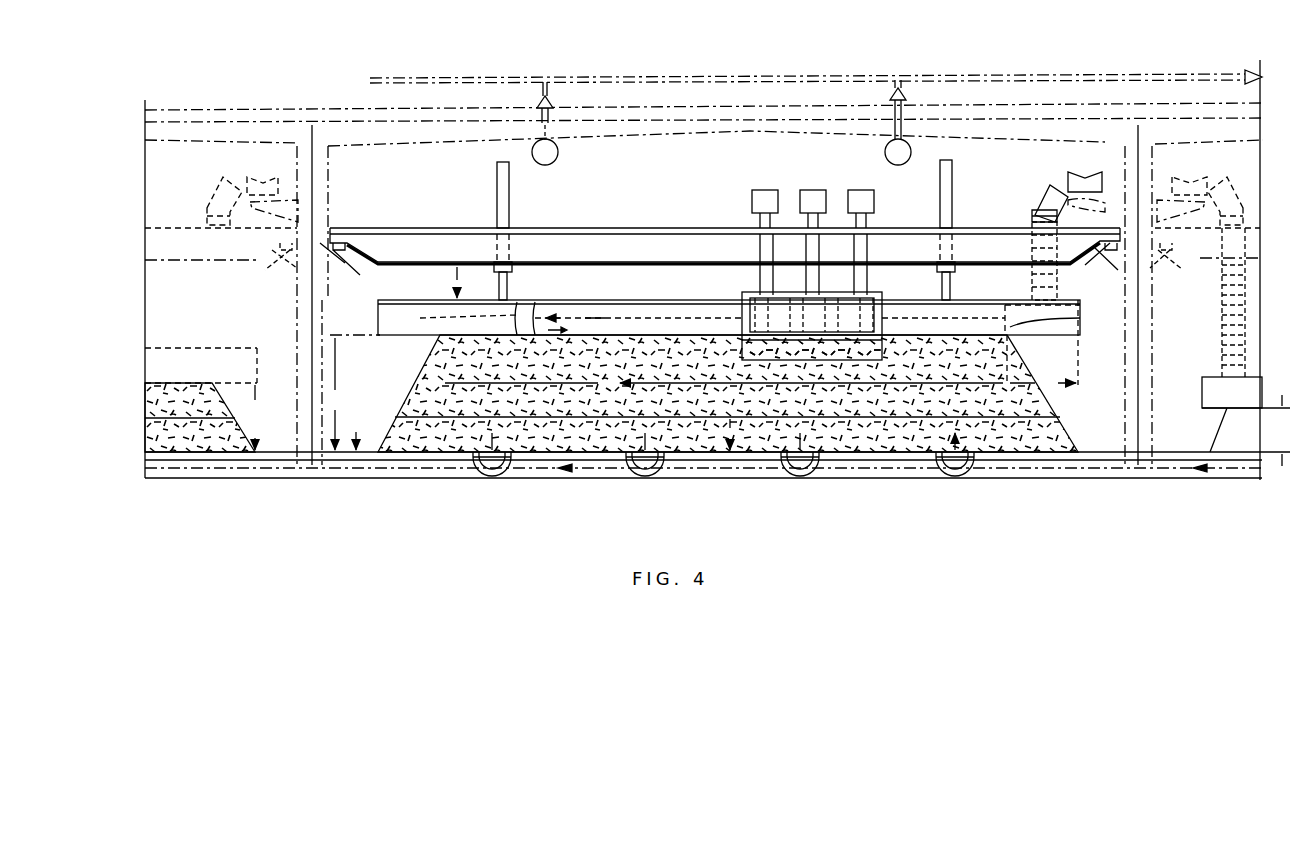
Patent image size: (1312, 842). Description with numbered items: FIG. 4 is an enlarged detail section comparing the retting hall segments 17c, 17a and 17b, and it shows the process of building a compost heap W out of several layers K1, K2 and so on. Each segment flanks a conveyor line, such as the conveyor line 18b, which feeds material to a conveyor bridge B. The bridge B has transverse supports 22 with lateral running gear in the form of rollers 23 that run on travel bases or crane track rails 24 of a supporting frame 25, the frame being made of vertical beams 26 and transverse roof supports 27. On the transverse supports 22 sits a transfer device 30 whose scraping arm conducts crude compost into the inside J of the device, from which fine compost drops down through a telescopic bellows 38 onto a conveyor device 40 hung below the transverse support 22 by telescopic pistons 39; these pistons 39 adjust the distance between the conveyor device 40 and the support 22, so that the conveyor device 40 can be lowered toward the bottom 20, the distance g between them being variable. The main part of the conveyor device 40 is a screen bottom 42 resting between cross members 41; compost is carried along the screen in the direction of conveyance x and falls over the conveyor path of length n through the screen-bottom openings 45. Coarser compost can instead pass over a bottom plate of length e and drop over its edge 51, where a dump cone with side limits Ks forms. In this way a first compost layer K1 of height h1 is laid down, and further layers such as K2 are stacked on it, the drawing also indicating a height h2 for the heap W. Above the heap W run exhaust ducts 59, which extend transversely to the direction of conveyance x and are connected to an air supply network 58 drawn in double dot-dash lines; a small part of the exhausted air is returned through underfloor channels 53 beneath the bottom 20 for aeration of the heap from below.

The retting-building segment 17a is at (190, 162).
The retting-building segment 17b is at (700, 168).
The retting-building segment 17c is at (1175, 405).
The conveyor line 18b is at (1052, 195).
The bottom 20 is at (357, 430).
The transverse support 22 is at (398, 238).
The rollers 23 is at (292, 258).
The travel base 24 is at (1098, 258).
The supporting frame 25 is at (935, 118).
The vertical beam 26 is at (318, 312).
The roof support 27 is at (1107, 128).
The transfer device 30 is at (1037, 210).
The bellows 38 is at (1032, 280).
The telescopic pistons 39 is at (500, 188).
The conveyor device 40 is at (641, 318).
The cross members 41 is at (672, 330).
The screen bottom 42 is at (522, 312).
The screen-bottom openings 45 is at (722, 318).
The edge 51 is at (1012, 325).
The underfloor channels 53 is at (490, 468).
The air supply network 58 is at (541, 120).
The exhaust ducts 59 is at (552, 160).
The conveyor bridge B is at (640, 226).
The inside of the transfer device J is at (1088, 180).
The first compost layer K1 is at (1040, 420).
The second compost layer K2 is at (205, 400).
The dump cone side limits Ks is at (1098, 434).
The compost heap W is at (433, 430).
The distance g is at (353, 392).
The height h1 is at (1018, 430).
The height h2 is at (262, 417).
The length n is at (726, 364).
The length e is at (1044, 346).
The direction of conveyance x is at (575, 319).